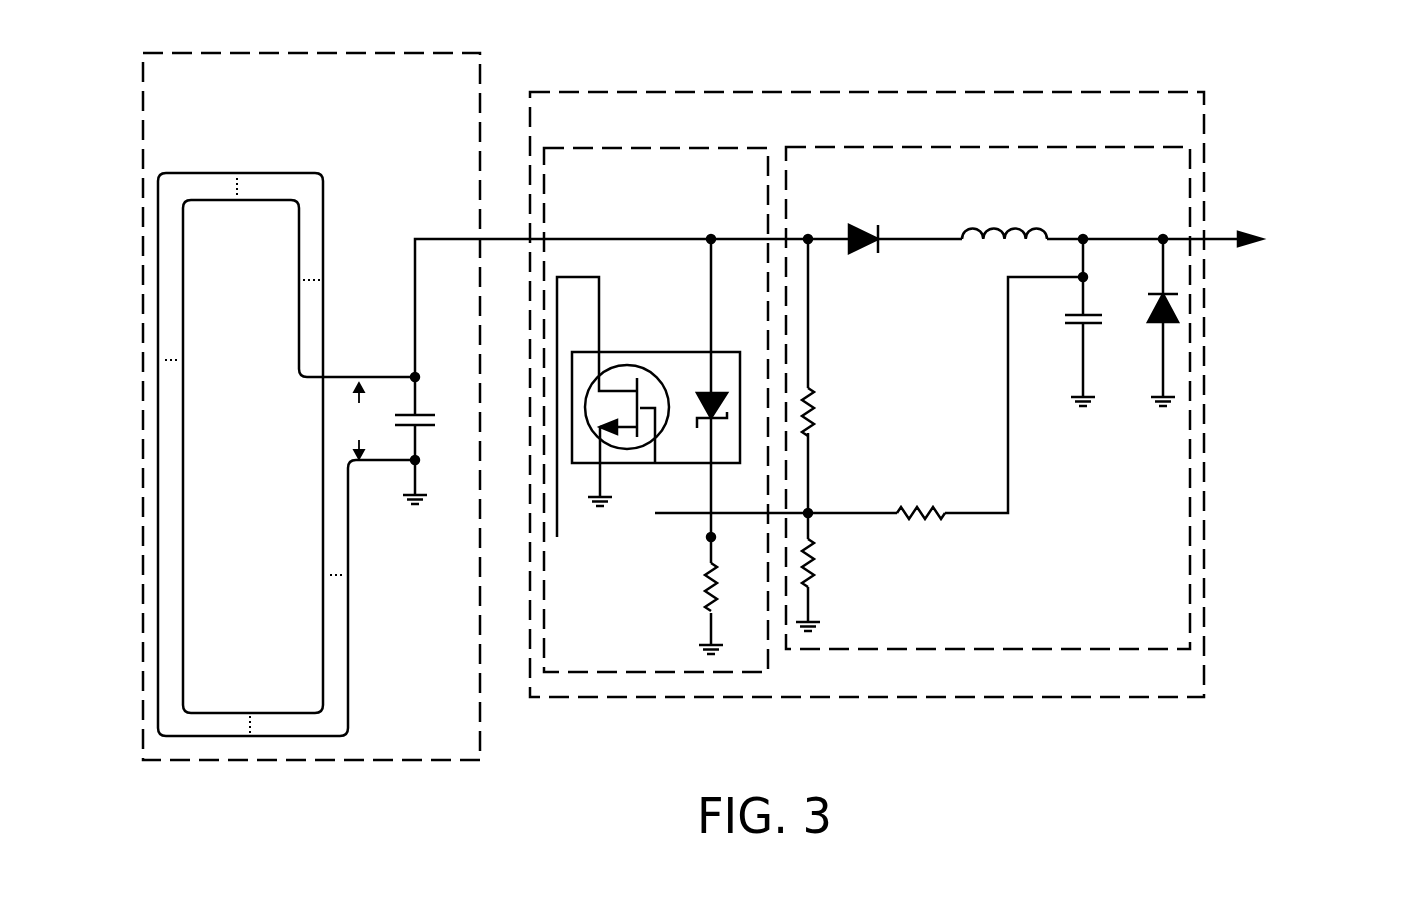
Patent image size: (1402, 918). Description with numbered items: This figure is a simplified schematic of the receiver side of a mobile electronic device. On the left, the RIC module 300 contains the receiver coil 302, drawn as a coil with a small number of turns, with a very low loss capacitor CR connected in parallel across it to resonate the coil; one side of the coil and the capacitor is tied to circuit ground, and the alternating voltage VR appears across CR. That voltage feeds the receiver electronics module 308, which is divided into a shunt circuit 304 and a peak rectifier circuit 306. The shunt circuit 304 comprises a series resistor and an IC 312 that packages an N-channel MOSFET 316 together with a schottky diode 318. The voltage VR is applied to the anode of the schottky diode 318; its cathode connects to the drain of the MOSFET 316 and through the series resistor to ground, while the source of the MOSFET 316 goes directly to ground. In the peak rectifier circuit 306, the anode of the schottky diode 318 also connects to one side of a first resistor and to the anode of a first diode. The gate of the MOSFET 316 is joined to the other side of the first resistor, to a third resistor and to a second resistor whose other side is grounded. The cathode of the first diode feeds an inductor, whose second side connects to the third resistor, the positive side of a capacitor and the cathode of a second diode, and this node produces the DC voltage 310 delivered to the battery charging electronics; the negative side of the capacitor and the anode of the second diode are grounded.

The RIC module 300 is at (311, 406).
The receiver coil 302 is at (223, 710).
The shunt circuit 304 is at (676, 410).
The peak rectifier circuit 306 is at (988, 398).
The receiver electronics module 308 is at (867, 394).
The DC voltage 310 is at (1225, 229).
The IC 312 is at (667, 347).
The N-channel MOSFET 316 is at (652, 364).
The schottky diode 318 is at (727, 402).